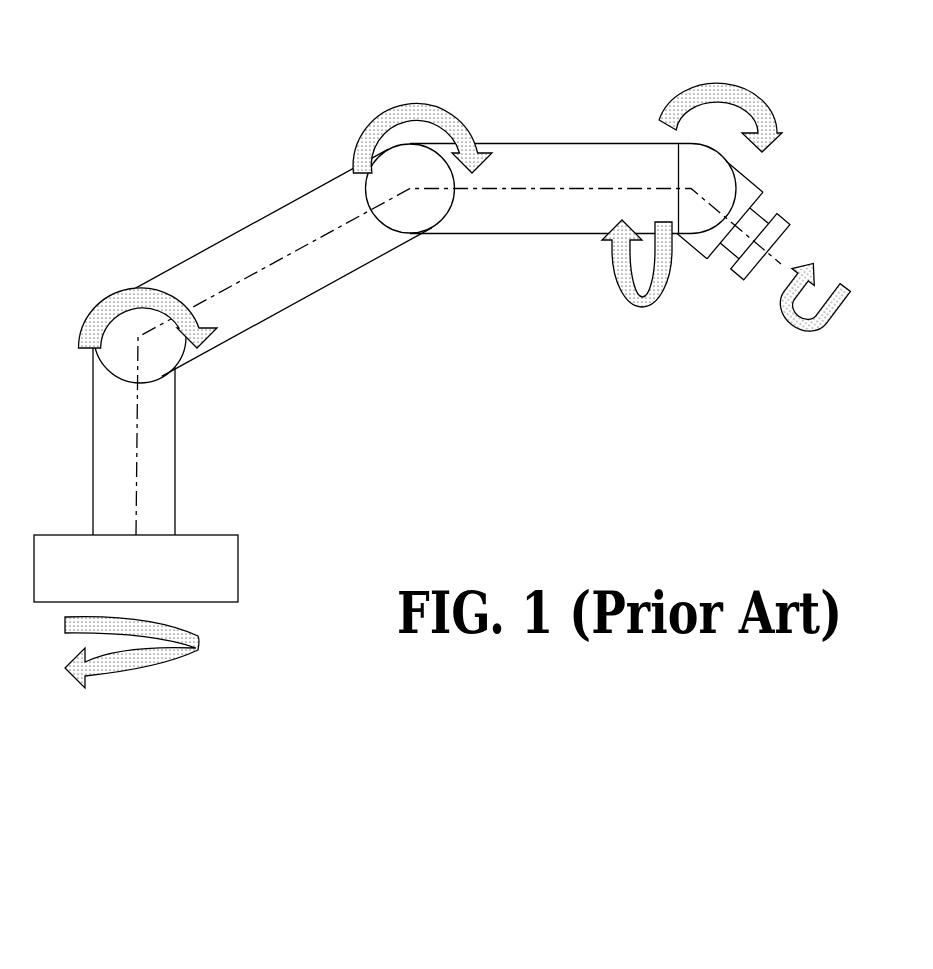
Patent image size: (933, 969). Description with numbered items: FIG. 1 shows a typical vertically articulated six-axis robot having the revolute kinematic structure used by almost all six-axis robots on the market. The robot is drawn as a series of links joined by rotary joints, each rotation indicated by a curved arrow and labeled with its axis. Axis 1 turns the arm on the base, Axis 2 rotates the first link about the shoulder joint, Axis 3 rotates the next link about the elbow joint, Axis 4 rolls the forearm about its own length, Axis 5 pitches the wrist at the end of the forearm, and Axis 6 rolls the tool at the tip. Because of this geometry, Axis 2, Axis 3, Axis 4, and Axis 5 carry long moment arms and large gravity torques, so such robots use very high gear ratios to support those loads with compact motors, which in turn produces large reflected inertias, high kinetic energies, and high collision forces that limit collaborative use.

The Axis 1 is at (132, 681).
The Axis 2 is at (147, 276).
The Axis 3 is at (422, 106).
The Axis 4 is at (637, 295).
The Axis 5 is at (720, 96).
The Axis 6 is at (834, 300).